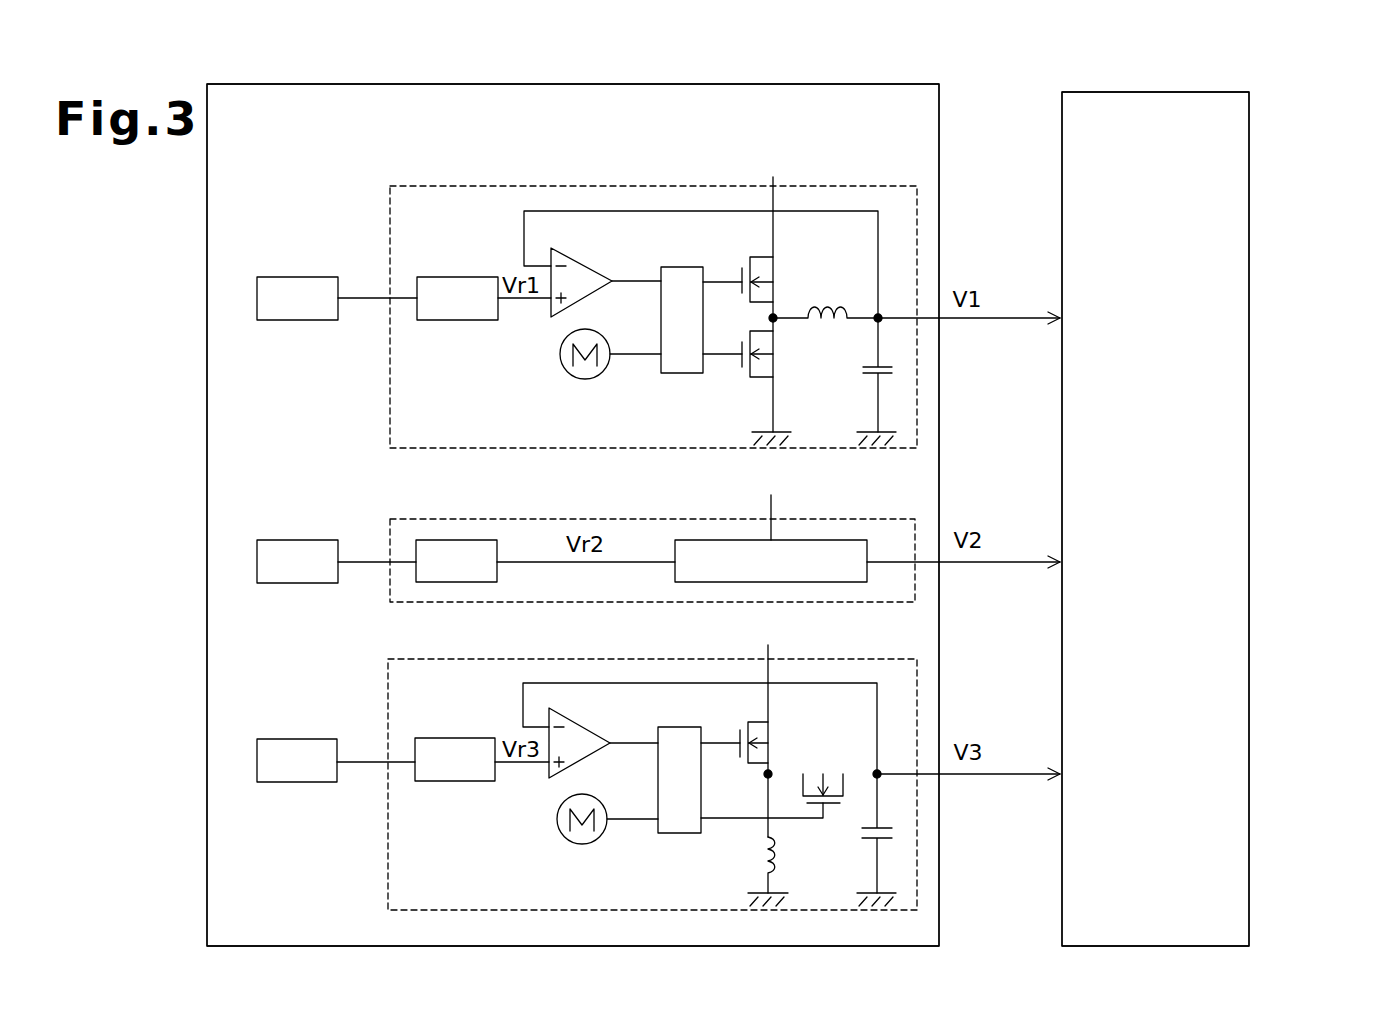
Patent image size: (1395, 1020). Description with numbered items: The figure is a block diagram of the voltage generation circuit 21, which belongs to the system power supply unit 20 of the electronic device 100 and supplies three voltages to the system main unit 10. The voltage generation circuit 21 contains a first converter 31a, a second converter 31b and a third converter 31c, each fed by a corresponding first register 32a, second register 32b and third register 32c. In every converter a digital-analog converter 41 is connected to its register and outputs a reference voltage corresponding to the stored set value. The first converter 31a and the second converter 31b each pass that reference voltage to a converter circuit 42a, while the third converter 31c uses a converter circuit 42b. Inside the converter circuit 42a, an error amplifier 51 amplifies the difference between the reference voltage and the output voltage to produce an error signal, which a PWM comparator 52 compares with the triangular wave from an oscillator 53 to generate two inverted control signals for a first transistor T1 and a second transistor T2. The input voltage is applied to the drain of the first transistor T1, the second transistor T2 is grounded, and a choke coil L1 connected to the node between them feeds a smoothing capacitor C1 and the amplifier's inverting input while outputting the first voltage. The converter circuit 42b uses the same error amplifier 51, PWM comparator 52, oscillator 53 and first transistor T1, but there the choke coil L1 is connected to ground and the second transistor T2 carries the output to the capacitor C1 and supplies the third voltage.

The electronic device 100 is at (1337, 147).
The system main unit 10 is at (1250, 135).
The system power supply unit 20 is at (941, 127).
The voltage generation circuit 21 is at (275, 181).
The first converter 31a is at (845, 186).
The second converter 31b is at (848, 519).
The third converter 31c is at (848, 659).
The first register 32a is at (299, 277).
The second register 32b is at (299, 540).
The third register 32c is at (299, 739).
The digital-analog converter 41 is at (456, 277).
The converter circuit 42a is at (543, 394).
The converter circuit 42b is at (533, 856).
The error amplifier 51 is at (582, 265).
The PWM comparator 52 is at (681, 374).
The oscillator 53 is at (560, 354).
The first transistor T1 is at (763, 268).
The second transistor T2 is at (763, 368).
The choke coil L1 is at (828, 310).
The smoothing capacitor C1 is at (869, 374).